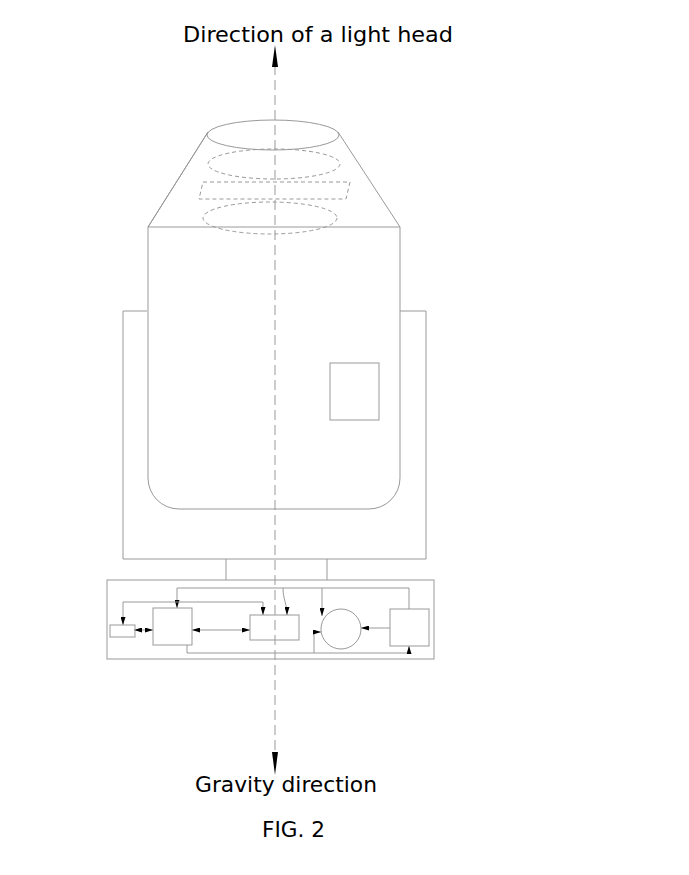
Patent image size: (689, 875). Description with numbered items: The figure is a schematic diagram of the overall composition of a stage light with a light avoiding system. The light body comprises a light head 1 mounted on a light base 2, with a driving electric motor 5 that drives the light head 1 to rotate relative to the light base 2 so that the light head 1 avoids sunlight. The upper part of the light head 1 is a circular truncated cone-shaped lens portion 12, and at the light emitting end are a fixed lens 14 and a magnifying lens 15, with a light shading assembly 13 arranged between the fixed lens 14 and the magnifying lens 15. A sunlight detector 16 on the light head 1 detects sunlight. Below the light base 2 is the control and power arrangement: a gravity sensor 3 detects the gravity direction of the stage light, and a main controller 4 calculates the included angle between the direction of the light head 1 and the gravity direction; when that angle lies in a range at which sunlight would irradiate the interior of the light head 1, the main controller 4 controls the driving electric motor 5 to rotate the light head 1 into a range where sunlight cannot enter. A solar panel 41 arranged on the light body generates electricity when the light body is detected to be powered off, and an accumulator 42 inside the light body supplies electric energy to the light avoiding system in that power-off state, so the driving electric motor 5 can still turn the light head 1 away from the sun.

The light head 1 is at (401, 264).
The light base 2 is at (408, 552).
The gravity sensor 3 is at (276, 632).
The main controller 4 is at (170, 632).
The driving electric motor 5 is at (355, 643).
The lens portion 12 is at (188, 163).
The light shading assembly 13 is at (330, 190).
The fixed lens 14 is at (342, 213).
The magnifying lens 15 is at (333, 150).
The sunlight detector 16 is at (380, 390).
The solar panel 41 is at (430, 627).
The accumulator 42 is at (112, 625).